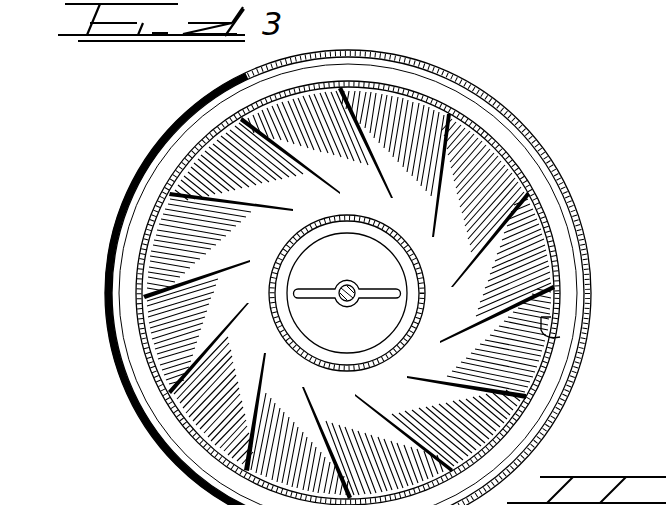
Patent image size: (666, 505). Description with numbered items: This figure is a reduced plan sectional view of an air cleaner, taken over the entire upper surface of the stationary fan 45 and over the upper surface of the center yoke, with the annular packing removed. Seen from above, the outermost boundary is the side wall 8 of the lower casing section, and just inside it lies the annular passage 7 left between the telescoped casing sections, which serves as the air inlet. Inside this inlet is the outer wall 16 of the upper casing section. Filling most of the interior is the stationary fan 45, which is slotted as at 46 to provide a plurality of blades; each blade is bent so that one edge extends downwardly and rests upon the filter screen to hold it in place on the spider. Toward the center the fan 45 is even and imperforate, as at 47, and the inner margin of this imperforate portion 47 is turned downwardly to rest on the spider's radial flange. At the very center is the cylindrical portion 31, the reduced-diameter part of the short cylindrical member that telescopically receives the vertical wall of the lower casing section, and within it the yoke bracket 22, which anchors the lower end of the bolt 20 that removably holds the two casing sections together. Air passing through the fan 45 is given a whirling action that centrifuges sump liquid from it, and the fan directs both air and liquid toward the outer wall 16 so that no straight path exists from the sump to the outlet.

The annular passage 7 is at (573, 288).
The side wall 8 is at (583, 255).
The outer wall 16 is at (545, 208).
The bolt 20 is at (349, 288).
The yoke bracket 22 is at (386, 296).
The cylindrical portion 31 is at (316, 364).
The stationary fan 45 is at (563, 337).
The slots 46 is at (513, 397).
The imperforate portion 47 is at (343, 213).